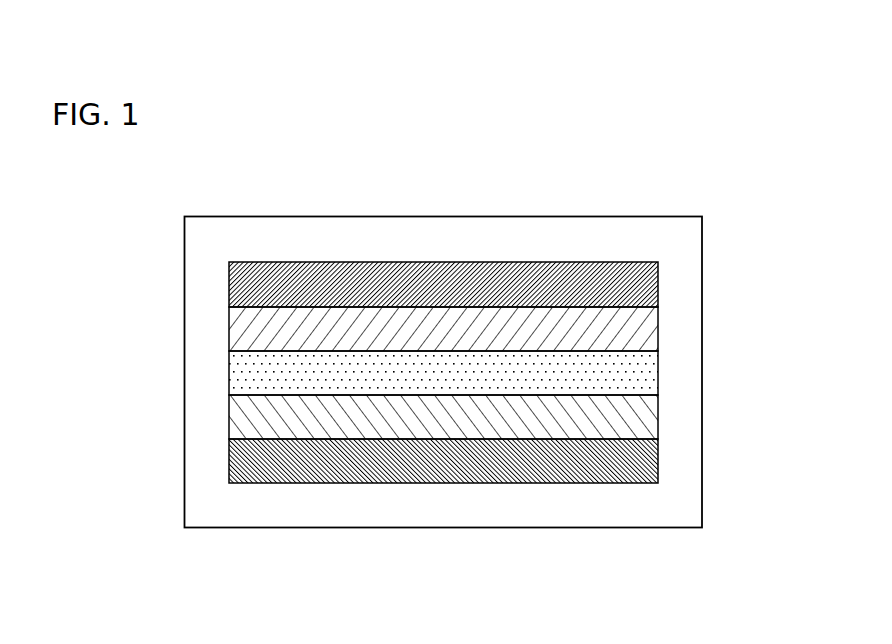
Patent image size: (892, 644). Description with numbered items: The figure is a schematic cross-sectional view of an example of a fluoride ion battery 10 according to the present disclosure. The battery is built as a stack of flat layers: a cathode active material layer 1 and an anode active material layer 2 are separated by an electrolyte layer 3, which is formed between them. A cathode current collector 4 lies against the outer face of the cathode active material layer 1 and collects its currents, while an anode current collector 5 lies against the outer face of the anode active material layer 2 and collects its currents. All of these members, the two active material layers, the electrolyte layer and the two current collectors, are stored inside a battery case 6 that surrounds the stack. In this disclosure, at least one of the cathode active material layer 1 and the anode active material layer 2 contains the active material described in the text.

The fluoride ion battery 10 is at (477, 337).
The battery case 6 is at (687, 246).
The cathode current collector 4 is at (630, 287).
The cathode active material layer 1 is at (630, 333).
The electrolyte layer 3 is at (630, 380).
The anode active material layer 2 is at (630, 422).
The anode current collector 5 is at (630, 464).